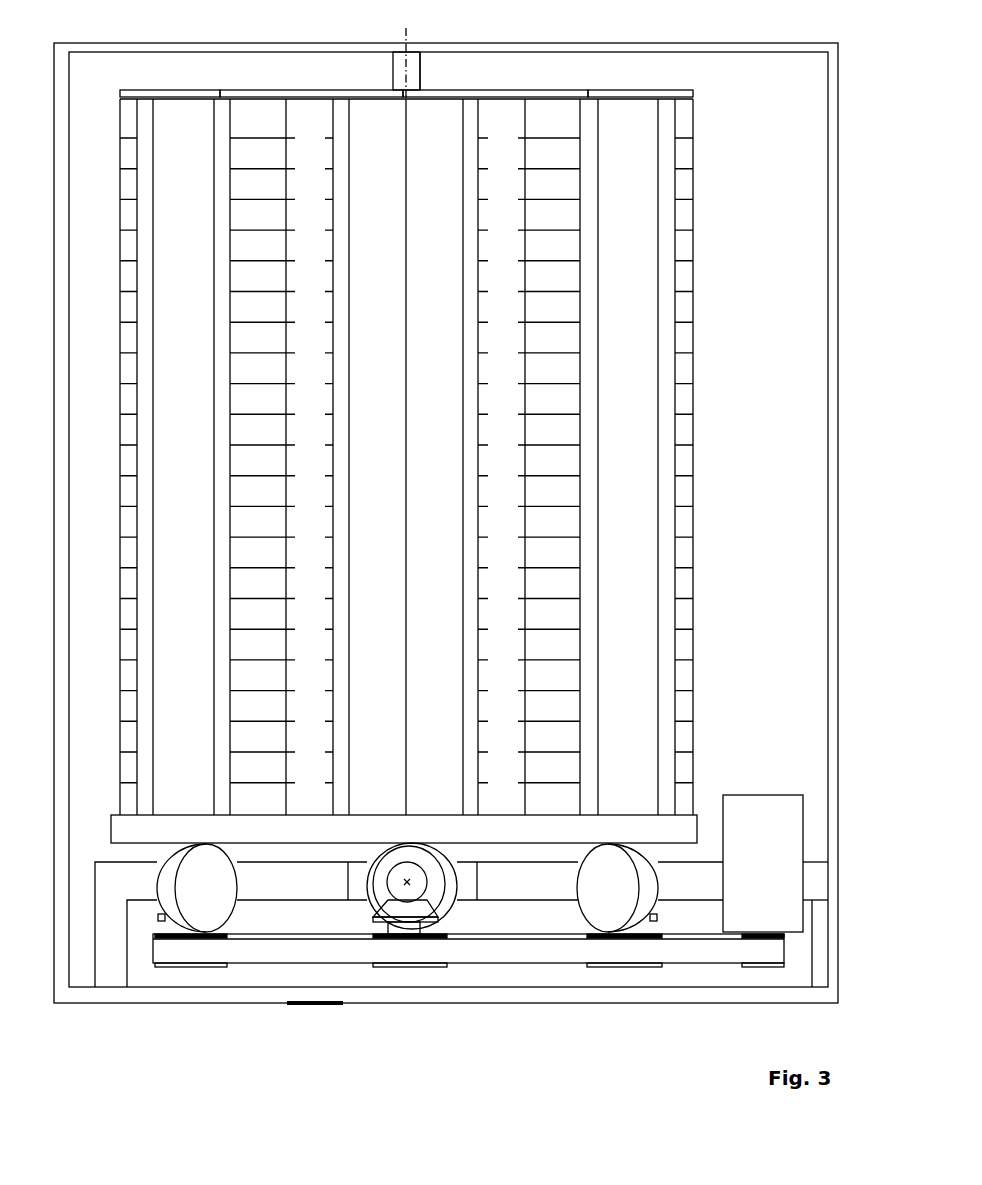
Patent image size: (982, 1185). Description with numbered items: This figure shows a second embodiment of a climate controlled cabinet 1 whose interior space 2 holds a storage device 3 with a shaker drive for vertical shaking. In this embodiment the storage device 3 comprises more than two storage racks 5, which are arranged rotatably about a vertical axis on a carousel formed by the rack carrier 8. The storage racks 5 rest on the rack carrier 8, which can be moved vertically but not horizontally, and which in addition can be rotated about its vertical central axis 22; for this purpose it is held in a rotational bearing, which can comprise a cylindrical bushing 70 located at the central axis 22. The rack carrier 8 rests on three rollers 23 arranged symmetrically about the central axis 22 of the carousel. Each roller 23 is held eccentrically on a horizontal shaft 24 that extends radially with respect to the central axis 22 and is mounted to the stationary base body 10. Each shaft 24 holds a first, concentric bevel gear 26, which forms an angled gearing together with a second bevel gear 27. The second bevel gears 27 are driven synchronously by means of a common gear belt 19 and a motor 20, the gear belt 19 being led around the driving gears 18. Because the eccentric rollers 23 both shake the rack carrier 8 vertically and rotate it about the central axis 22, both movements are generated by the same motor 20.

The climate controlled cabinet 1 is at (446, 501).
The interior space 2 is at (758, 423).
The storage device 3 is at (806, 189).
The storage racks 5 is at (406, 414).
The rack carrier 8 is at (387, 803).
The base body 10 is at (442, 953).
The driving gear 18 is at (434, 997).
The gear belt 19 is at (468, 989).
The motor 20 is at (805, 845).
The central axis 22 is at (393, 50).
The rollers 23 is at (397, 944).
The horizontal shaft 24 is at (399, 944).
The first bevel gear 26 is at (429, 966).
The second bevel gear 27 is at (391, 966).
The cylindrical bushing 70 is at (441, 46).